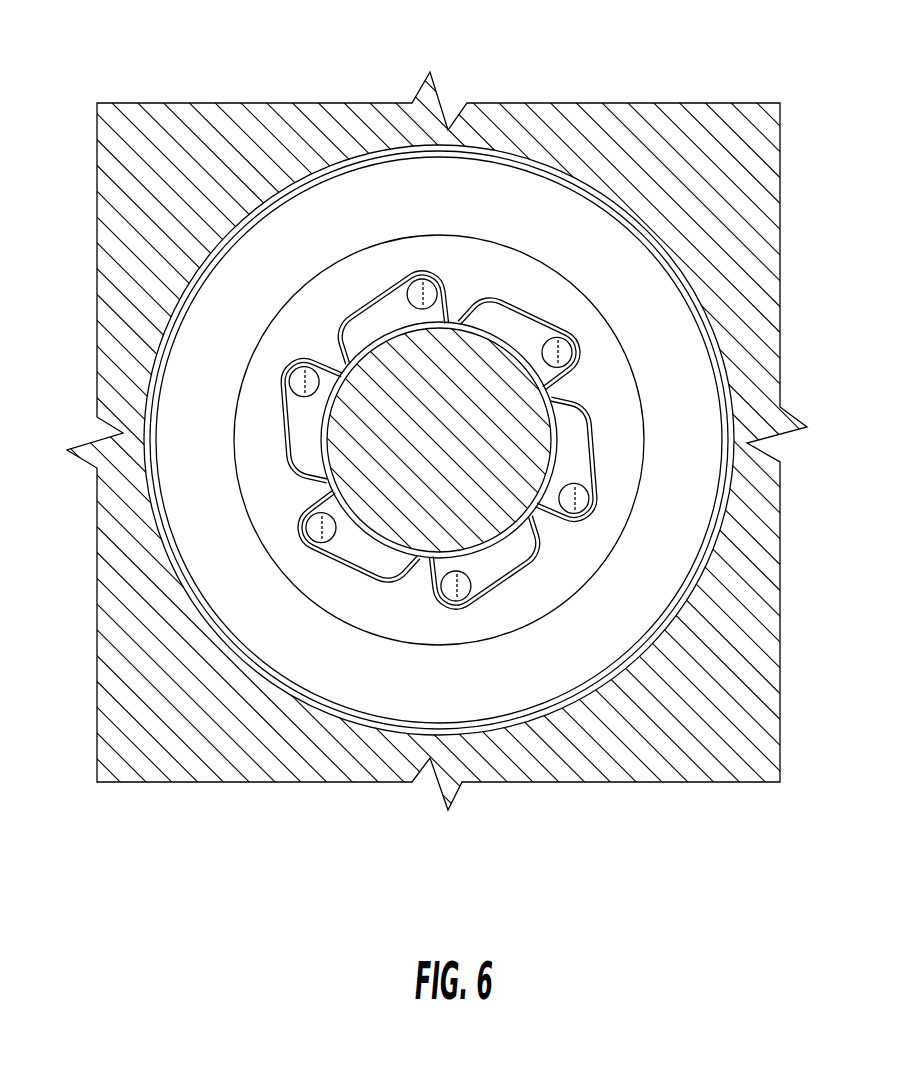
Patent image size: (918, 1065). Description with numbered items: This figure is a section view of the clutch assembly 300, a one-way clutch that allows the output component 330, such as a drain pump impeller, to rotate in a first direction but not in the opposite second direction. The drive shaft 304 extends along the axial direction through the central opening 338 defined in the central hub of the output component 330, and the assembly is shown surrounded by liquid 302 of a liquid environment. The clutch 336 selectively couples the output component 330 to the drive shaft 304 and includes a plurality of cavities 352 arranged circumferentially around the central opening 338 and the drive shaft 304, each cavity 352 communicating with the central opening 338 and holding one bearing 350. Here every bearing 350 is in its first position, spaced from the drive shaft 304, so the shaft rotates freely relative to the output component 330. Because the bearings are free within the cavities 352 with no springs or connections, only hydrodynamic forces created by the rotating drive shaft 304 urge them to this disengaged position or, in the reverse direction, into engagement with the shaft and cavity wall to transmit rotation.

The clutch assembly 300 is at (243, 89).
The liquid 302 is at (375, 319).
The drive shaft 304 is at (421, 452).
The output component 330 is at (751, 215).
The clutch 336 is at (240, 303).
The central opening 338 is at (547, 514).
The bearing 350 is at (322, 537).
The cavity 352 is at (523, 322).